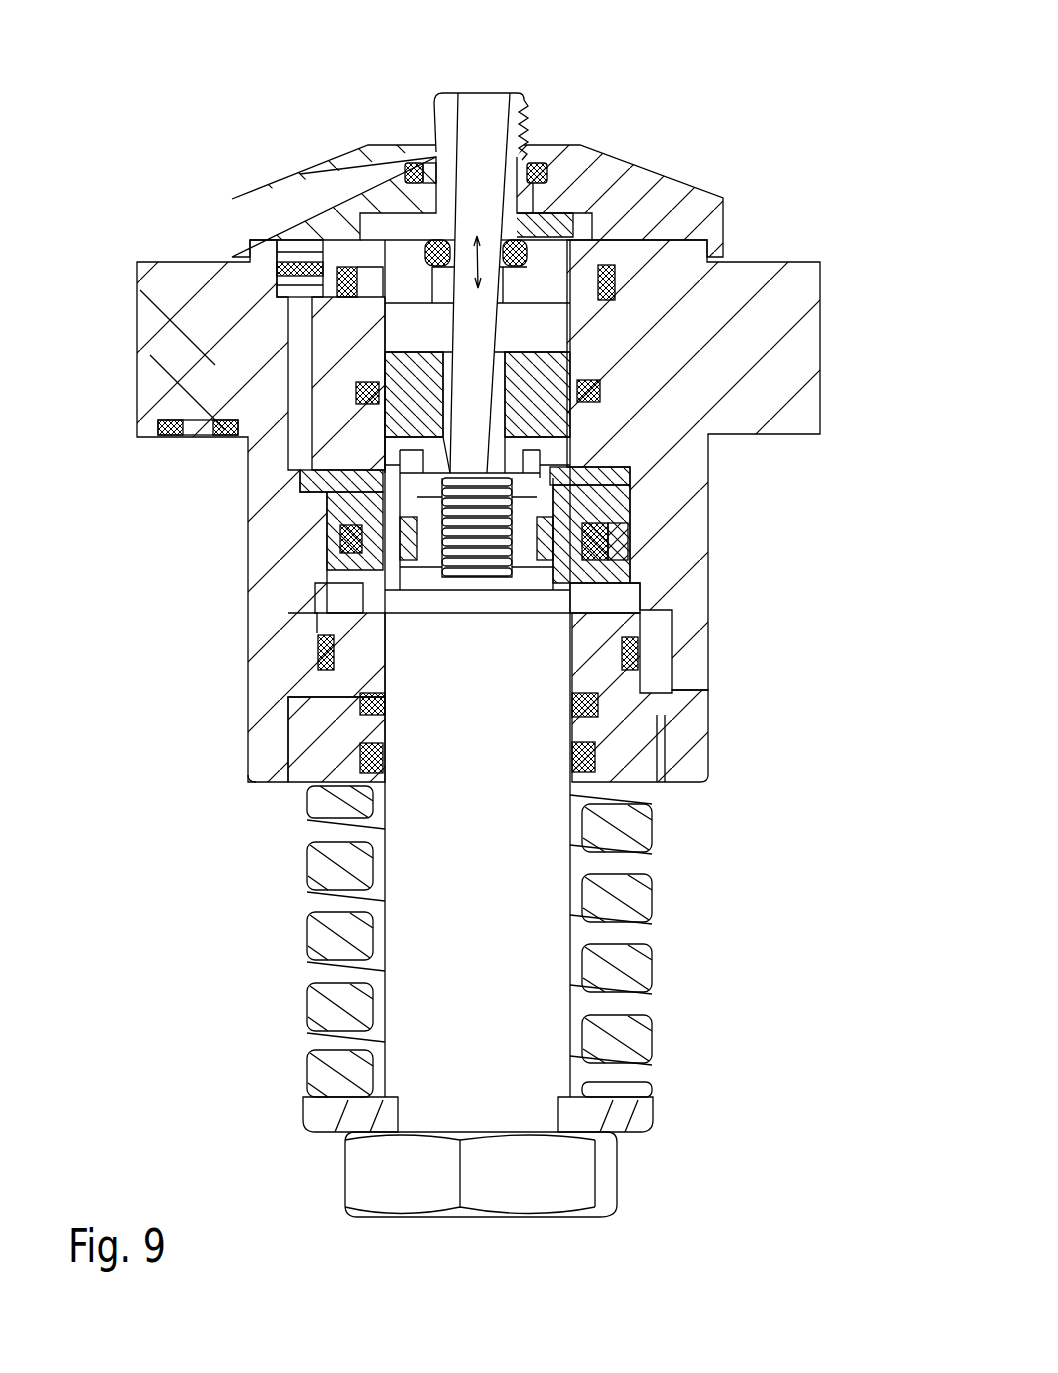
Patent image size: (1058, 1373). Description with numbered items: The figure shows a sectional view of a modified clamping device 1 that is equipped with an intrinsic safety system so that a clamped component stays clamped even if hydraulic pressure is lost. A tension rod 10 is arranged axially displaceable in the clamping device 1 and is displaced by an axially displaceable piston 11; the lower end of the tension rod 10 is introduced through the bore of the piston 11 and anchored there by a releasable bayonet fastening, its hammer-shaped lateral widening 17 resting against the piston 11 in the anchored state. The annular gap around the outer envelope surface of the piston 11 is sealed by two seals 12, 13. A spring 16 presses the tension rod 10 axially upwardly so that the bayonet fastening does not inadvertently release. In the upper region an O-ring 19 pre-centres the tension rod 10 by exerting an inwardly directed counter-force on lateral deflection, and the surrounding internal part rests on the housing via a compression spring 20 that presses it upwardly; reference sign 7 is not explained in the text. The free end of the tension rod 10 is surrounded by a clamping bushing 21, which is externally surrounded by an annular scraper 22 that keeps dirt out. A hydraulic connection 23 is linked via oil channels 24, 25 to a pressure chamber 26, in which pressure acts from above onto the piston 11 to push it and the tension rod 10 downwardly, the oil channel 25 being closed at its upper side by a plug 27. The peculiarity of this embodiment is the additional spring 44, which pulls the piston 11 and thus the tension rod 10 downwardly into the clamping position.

The clamping device 1 is at (312, 112).
The cap 7 is at (668, 192).
The tension rod 10 is at (468, 108).
The piston 11 is at (327, 510).
The seal 12 is at (597, 393).
The seal 13 is at (630, 545).
The spring 16 is at (330, 578).
The hammer-shaped lateral widening 17 is at (545, 463).
The O-ring 19 is at (545, 250).
The compression spring 20 is at (617, 268).
The clamping bushing 21 is at (524, 120).
The scraper 22 is at (547, 167).
The hydraulic connection 23 is at (192, 433).
The oil channel 24 is at (263, 355).
The oil channel 25 is at (298, 403).
The pressure chamber 26 is at (330, 485).
The plug 27 is at (246, 196).
The additional spring 44 is at (615, 905).